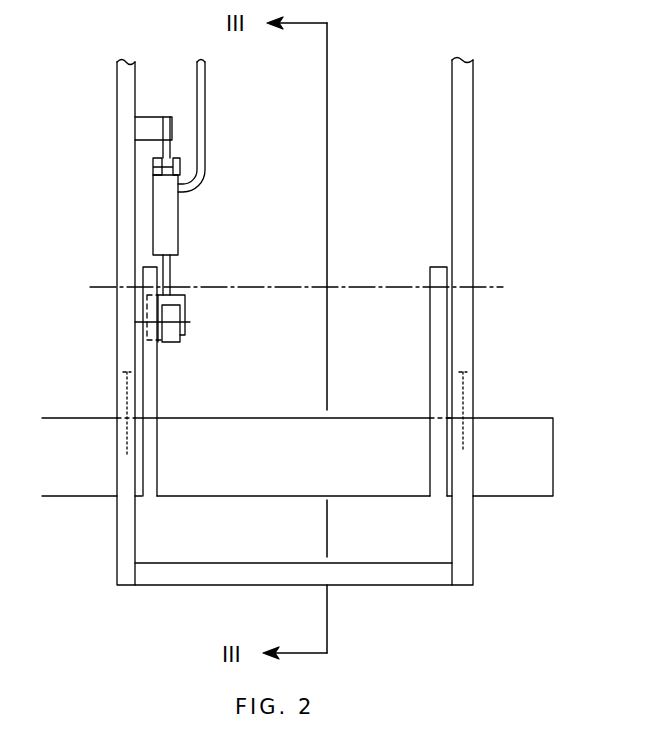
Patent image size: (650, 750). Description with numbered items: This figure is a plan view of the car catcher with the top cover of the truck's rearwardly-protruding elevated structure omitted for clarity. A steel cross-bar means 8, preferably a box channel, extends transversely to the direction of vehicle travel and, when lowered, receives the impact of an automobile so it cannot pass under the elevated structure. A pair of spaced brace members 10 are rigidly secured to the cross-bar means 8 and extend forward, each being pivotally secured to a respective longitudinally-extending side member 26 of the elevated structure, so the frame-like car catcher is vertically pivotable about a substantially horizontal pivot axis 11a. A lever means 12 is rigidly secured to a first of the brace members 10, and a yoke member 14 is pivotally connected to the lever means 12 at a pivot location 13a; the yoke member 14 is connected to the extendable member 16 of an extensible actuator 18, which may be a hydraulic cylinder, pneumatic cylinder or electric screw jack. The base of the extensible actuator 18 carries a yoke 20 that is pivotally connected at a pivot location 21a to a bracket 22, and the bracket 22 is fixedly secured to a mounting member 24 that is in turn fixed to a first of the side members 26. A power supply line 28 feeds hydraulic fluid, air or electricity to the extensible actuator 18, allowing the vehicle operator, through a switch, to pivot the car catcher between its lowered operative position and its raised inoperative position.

The cross-bar means 8 is at (302, 460).
The brace members 10 is at (160, 400).
The pivot axis 11a is at (108, 290).
The lever means 12 is at (163, 341).
The block 13a is at (186, 324).
The yoke member 14 is at (187, 299).
The extendable member 16 is at (170, 280).
The extensible actuator 18 is at (178, 222).
The yoke 20 is at (178, 160).
The connector block 21a is at (153, 167).
The bracket 22 is at (167, 116).
The mounting member 24 is at (141, 131).
The side members 26 is at (118, 85).
The power supply line 28 is at (207, 162).